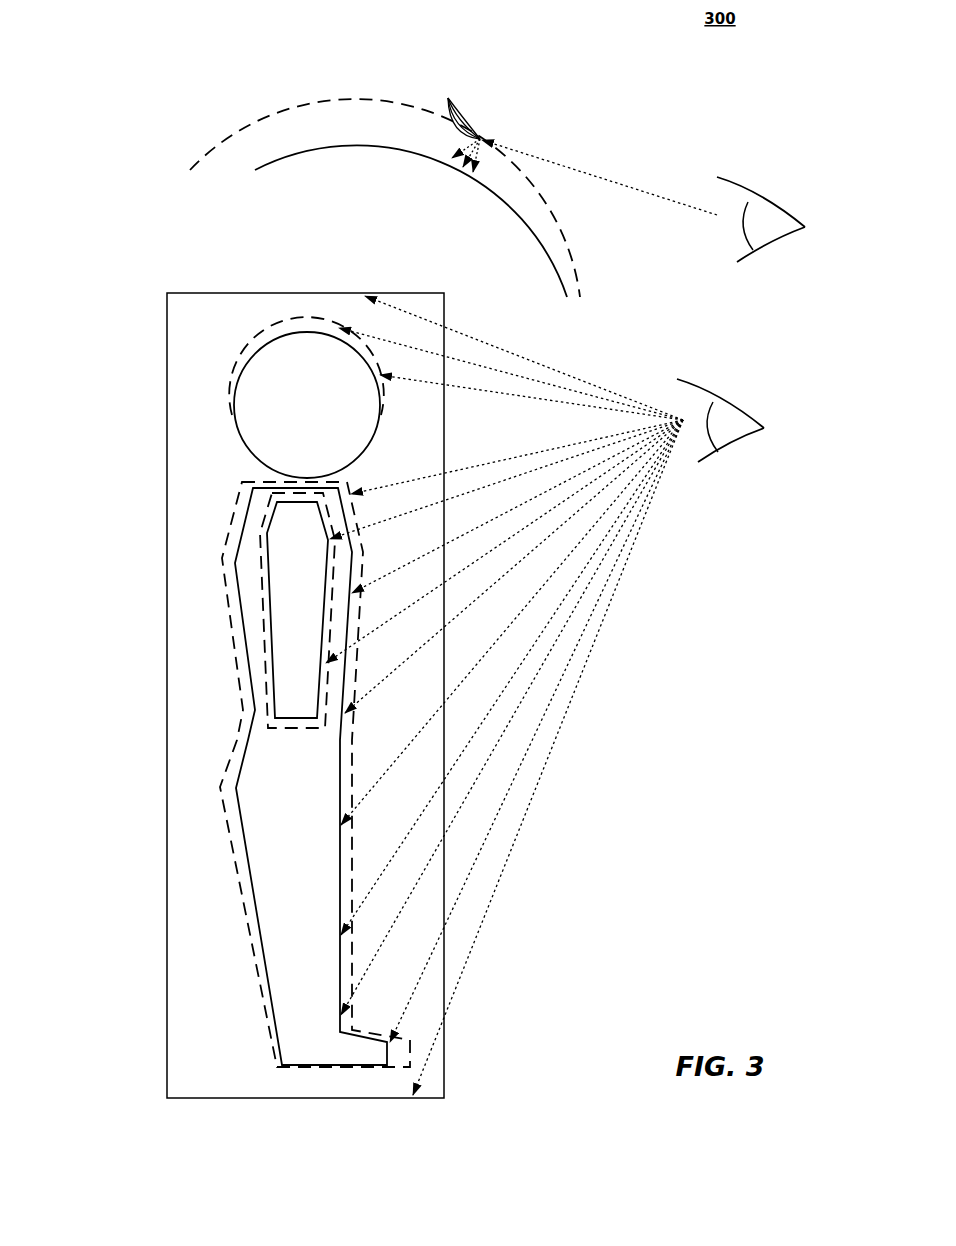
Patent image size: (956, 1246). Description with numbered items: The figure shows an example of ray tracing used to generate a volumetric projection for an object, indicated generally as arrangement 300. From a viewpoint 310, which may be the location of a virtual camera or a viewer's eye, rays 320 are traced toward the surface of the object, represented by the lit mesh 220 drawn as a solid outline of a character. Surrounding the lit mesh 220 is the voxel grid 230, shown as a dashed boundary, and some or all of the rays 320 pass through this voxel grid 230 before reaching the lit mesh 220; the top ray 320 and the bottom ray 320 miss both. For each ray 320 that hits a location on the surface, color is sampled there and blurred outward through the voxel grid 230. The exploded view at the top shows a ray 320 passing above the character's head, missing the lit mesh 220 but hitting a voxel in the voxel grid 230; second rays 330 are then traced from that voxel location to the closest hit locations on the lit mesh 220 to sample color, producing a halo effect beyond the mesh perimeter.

The imaging system / scene arrangement 300 is at (432, 588).
The lit mesh 220 is at (263, 158).
The voxel grid 230 is at (207, 152).
The viewpoint 310 is at (773, 198).
The rays 320 is at (521, 617).
The second rays 330 is at (456, 125).